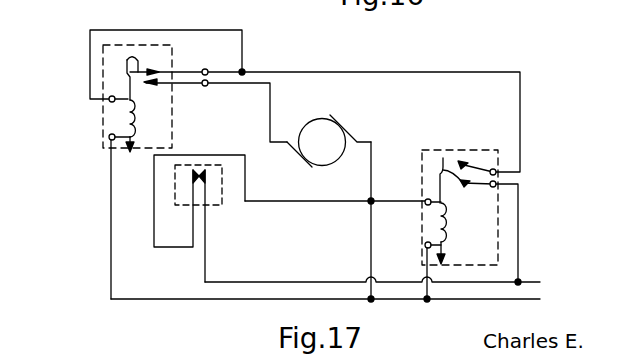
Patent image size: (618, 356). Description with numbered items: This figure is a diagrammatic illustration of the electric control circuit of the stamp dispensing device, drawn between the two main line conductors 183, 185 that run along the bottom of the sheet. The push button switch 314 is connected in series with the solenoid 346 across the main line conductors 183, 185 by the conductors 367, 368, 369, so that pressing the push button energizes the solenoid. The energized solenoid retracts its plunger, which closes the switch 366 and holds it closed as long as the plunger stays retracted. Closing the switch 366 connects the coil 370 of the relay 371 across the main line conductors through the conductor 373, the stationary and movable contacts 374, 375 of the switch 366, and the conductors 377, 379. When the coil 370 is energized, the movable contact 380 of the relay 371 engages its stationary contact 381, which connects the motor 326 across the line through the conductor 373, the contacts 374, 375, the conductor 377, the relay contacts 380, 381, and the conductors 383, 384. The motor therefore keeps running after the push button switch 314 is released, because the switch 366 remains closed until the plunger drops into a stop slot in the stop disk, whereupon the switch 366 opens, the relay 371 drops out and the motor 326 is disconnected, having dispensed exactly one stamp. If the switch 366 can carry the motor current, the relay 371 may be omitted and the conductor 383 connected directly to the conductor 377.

The main line conductor 183 is at (505, 299).
The main line conductor 185 is at (528, 280).
The push button switch 314 is at (216, 206).
The motor 326 is at (313, 132).
The solenoid 346 is at (453, 217).
The switch 366 is at (488, 148).
The conductor 367 is at (205, 262).
The conductor 368 is at (288, 201).
The conductor 369 is at (427, 265).
The relay coil 370 is at (105, 118).
The relay 371 is at (158, 45).
The conductor 373 is at (519, 197).
The stationary contact 374 is at (443, 173).
The movable contact 375 is at (462, 160).
The conductor 377 is at (522, 106).
The conductor 379 is at (111, 256).
The movable contact 380 is at (127, 60).
The stationary contact 381 is at (168, 84).
The conductor 383 is at (259, 90).
The conductor 384 is at (371, 184).